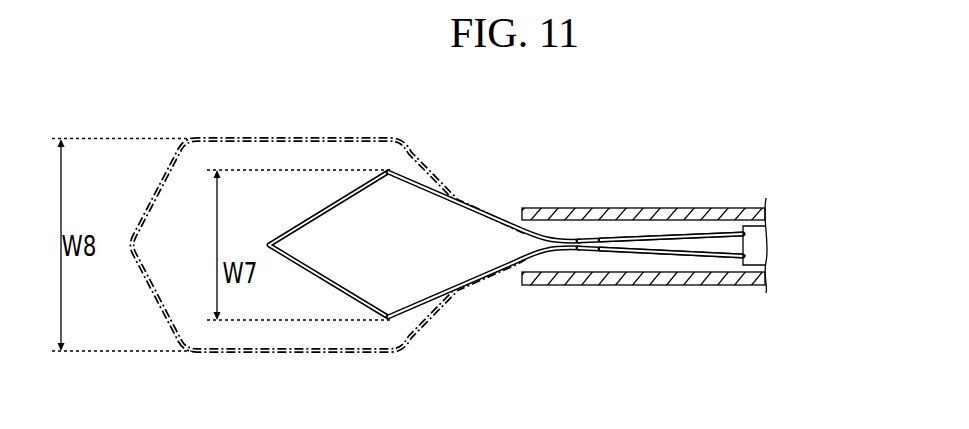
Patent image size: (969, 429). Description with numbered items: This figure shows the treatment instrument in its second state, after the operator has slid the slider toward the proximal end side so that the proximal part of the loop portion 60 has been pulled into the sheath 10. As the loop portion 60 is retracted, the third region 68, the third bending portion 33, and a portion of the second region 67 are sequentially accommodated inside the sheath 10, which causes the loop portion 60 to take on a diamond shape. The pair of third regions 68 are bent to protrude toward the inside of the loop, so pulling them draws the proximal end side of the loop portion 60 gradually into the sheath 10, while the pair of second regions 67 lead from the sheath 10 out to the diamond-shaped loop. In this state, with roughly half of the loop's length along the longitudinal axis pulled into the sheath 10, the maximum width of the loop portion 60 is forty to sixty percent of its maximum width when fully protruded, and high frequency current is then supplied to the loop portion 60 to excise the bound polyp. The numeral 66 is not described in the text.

The sheath 10 is at (717, 210).
The third bending portion 33 is at (568, 240).
The loop portion 60 is at (430, 158).
The loop side portion 66 is at (323, 205).
The second region 67 is at (478, 217).
The third region 68 is at (667, 237).